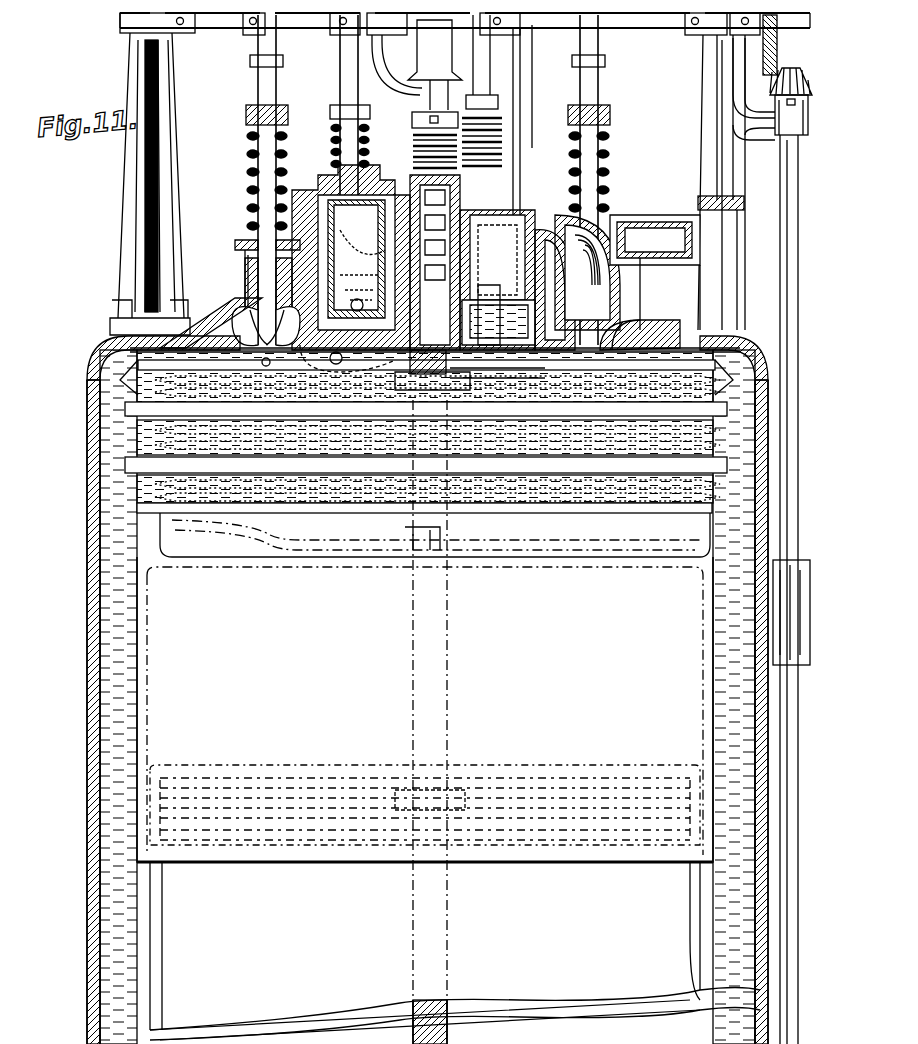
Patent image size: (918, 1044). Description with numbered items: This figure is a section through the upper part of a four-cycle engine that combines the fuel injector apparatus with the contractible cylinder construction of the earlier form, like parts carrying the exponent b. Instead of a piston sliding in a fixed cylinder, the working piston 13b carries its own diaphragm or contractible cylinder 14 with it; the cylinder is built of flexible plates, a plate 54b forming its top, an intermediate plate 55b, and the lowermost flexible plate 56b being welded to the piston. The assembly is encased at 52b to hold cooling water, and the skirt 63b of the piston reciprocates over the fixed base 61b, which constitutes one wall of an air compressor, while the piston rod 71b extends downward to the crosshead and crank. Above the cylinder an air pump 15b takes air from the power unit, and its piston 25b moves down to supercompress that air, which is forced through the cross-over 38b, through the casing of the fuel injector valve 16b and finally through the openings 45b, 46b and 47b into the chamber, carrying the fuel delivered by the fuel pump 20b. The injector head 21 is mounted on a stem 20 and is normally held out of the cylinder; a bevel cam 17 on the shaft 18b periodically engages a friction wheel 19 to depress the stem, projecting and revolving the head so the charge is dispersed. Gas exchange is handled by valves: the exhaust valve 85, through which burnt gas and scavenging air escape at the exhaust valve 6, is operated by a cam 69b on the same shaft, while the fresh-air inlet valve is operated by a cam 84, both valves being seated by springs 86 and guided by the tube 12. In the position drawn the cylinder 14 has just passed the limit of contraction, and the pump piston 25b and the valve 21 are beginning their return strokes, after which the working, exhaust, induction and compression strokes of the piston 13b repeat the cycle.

The shaft 18b is at (240, 20).
The cam 69b is at (262, 42).
The springs 86 is at (248, 157).
The cam 84 is at (598, 43).
The stem 20 is at (367, 123).
The bevel cam 17 is at (417, 65).
The friction wheel 19 is at (435, 108).
The tube 12 is at (511, 37).
The fuel injector valve 16b is at (465, 200).
The valve casing 20b is at (488, 218).
The injector head 21 is at (496, 290).
The air pump 15b is at (275, 246).
The piston 25b is at (278, 273).
The exhaust valve 85 is at (238, 310).
The skirt 63b is at (140, 630).
The plate 54b is at (125, 360).
The middle plate 55b is at (126, 410).
The lowermost flexible plate 56b is at (150, 480).
The contractible cylinder 14 is at (430, 720).
The opening 45b is at (400, 378).
The opening 46b is at (470, 386).
The opening 47b is at (448, 358).
The cross-over 38b is at (347, 361).
The exhaust valve 6 is at (264, 365).
The casing 52b is at (100, 572).
The piston 13b is at (322, 530).
The fixed base 61b is at (195, 765).
The piston rod 71b is at (432, 1012).